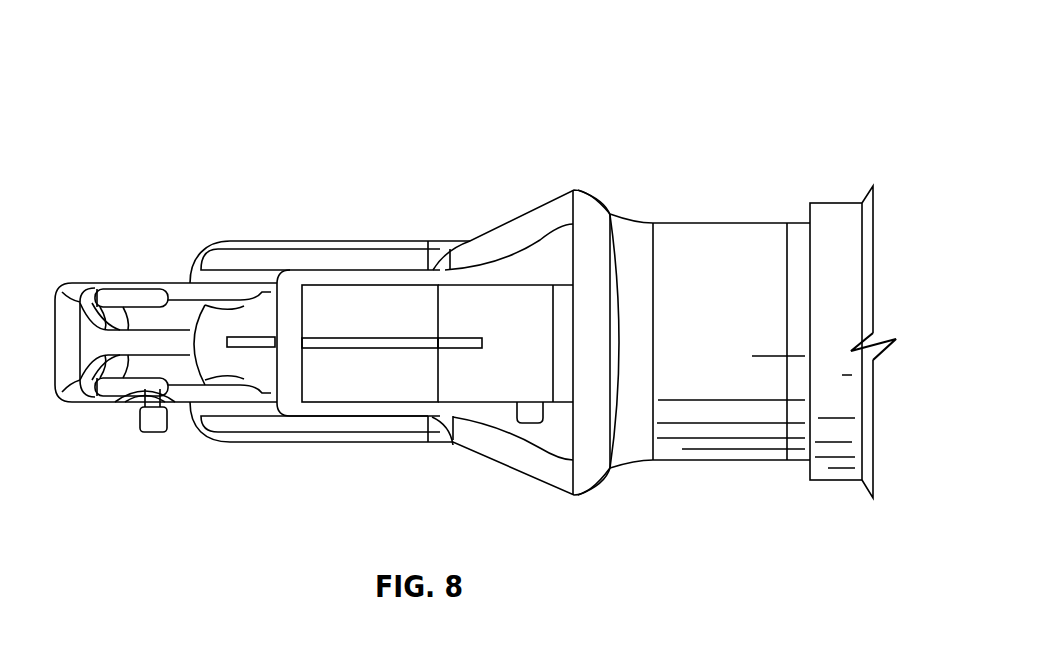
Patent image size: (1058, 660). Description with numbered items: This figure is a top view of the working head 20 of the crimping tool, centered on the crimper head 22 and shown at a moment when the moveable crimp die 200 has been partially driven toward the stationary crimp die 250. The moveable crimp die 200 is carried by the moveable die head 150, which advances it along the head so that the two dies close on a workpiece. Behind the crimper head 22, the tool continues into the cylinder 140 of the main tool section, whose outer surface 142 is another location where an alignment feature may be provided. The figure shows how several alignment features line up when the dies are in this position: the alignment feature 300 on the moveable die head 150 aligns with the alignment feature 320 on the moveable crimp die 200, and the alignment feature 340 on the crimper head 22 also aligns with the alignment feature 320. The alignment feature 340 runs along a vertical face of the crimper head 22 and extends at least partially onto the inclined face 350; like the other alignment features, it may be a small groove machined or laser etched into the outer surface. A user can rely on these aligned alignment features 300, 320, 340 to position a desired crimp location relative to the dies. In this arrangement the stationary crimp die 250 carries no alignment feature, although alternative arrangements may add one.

The connector assembly 20 is at (475, 278).
The crimper head 22 is at (543, 270).
The cylinder 140 is at (783, 223).
The outer surface 142 is at (688, 235).
The moveable die head 150 is at (507, 308).
The moveable crimp die 200 is at (353, 378).
The stationary crimp die 250 is at (278, 308).
The alignment feature 300 is at (465, 348).
The alignment feature 320 is at (352, 338).
The alignment feature 340 is at (243, 337).
The inclined face 350 is at (225, 360).